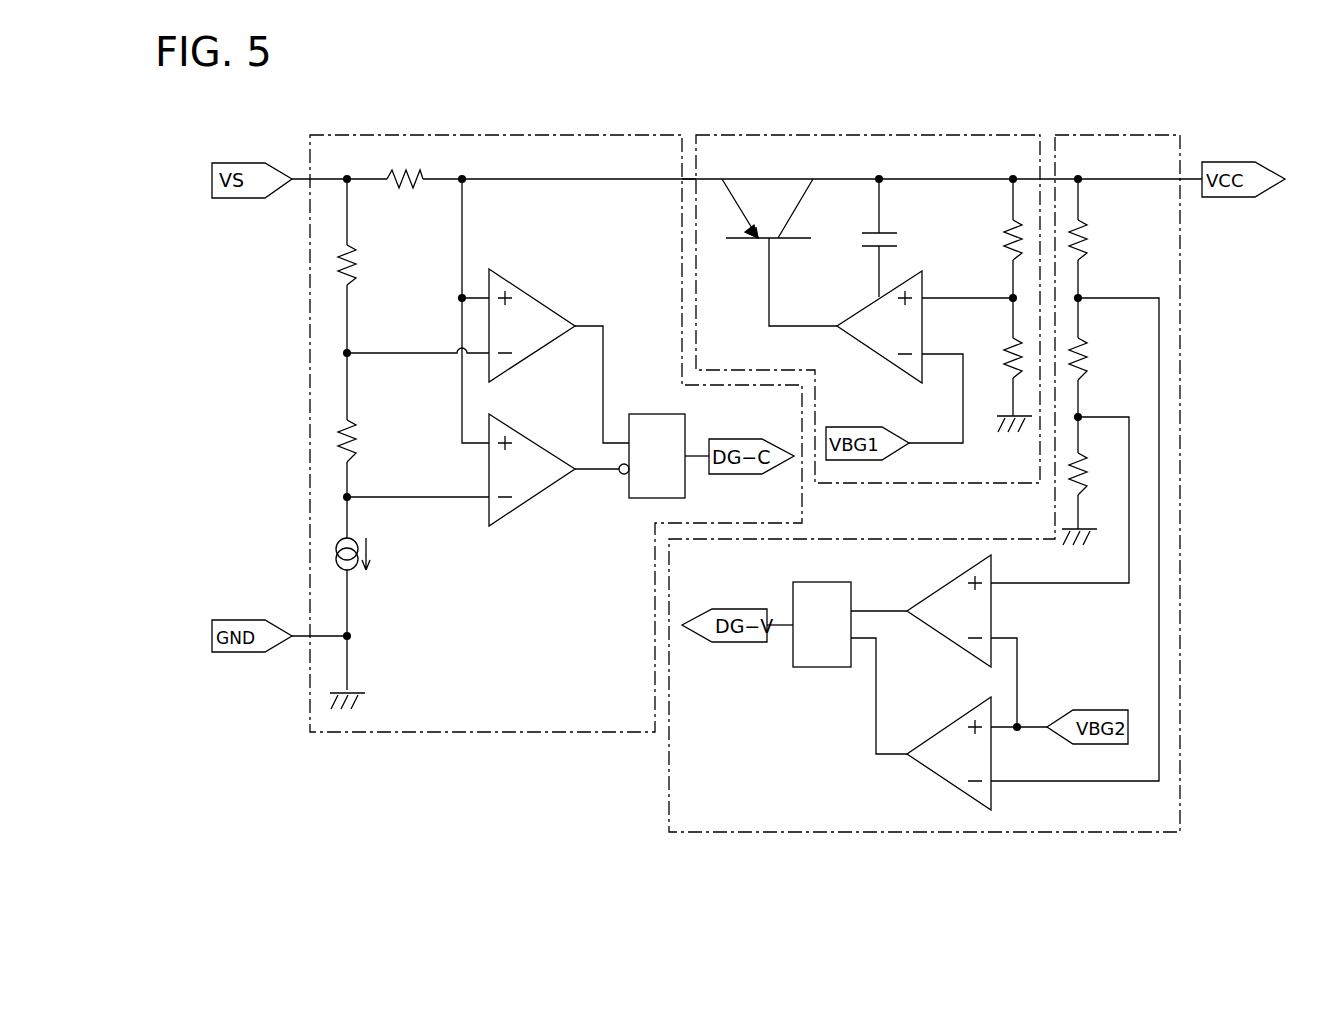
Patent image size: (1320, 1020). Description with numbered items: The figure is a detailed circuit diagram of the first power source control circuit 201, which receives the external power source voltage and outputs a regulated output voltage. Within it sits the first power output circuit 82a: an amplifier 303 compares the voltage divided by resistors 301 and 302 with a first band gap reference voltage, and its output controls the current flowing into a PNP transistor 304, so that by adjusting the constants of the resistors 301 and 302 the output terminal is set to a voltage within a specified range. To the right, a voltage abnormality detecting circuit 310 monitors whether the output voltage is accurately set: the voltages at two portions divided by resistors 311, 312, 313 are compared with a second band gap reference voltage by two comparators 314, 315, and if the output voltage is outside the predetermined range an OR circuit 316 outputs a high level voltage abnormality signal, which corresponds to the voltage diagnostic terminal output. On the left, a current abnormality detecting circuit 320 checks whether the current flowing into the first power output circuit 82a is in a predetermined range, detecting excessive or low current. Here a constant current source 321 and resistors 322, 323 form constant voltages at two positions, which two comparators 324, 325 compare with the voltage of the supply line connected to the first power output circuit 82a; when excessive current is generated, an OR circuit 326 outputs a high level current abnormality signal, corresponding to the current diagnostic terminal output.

The first power source control circuit 201 is at (684, 108).
The current abnormality detecting circuit 320 is at (497, 134).
The first power output circuit 82a is at (951, 134).
The voltage abnormality detecting circuit 310 is at (1182, 470).
The constant current source 321 is at (352, 541).
The resistor 322 is at (354, 258).
The resistor 323 is at (354, 435).
The comparator 324 is at (536, 300).
The comparator 325 is at (536, 445).
The OR circuit 326 is at (648, 414).
The resistor 301 is at (1006, 232).
The resistor 302 is at (1006, 346).
The amplifier 303 is at (874, 364).
The PNP transistor 304 is at (789, 240).
The resistor 311 is at (1085, 235).
The resistor 312 is at (1087, 346).
The resistor 313 is at (1086, 488).
The comparator 314 is at (930, 598).
The comparator 315 is at (930, 738).
The OR circuit 316 is at (800, 582).